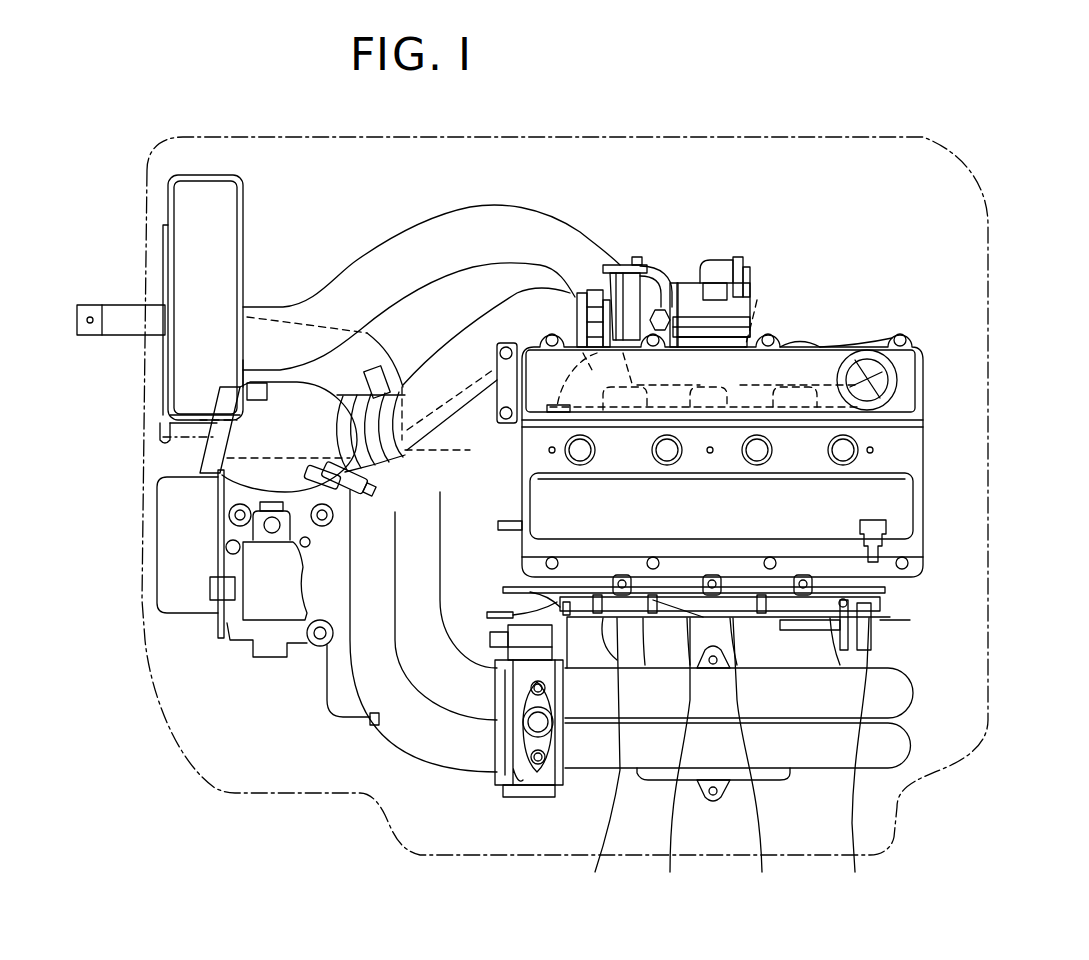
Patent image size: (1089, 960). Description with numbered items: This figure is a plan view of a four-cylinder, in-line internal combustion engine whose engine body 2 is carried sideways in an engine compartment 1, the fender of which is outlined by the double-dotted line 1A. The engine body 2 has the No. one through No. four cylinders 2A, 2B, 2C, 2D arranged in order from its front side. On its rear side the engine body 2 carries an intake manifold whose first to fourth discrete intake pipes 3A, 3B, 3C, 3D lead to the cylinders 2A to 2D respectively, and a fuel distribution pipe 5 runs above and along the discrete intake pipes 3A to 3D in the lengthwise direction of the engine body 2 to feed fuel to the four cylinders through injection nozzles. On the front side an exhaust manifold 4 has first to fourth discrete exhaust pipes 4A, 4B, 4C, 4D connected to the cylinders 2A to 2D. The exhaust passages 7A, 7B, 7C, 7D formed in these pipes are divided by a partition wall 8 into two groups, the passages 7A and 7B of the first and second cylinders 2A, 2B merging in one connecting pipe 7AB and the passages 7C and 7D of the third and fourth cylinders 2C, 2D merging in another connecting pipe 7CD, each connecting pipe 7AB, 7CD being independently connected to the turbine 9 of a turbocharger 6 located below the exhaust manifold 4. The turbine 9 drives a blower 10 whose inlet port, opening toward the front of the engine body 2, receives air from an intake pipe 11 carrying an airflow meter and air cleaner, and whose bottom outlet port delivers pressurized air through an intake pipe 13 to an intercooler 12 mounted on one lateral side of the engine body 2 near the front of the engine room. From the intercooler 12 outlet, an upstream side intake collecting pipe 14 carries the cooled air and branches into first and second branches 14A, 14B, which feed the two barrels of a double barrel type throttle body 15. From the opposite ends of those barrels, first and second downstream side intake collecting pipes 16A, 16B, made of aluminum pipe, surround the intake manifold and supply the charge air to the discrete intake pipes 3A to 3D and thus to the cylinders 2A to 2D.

The engine compartment 1 is at (962, 444).
The double-dotted line outlining the fender 1A is at (990, 527).
The engine body 2 is at (923, 423).
The No. 1 cylinder 2A is at (580, 462).
The No. 2 cylinder 2B is at (667, 462).
The No. 3 cylinder 2C is at (757, 462).
The No. 4 cylinder 2D is at (843, 462).
The first discrete intake pipe 3A is at (600, 759).
The second discrete intake pipe 3B is at (673, 759).
The third discrete intake pipe 3C is at (755, 759).
The fourth discrete intake pipe 3D is at (855, 759).
The exhaust manifold 4 is at (805, 328).
The first discrete exhaust pipe 4A is at (567, 393).
The second discrete exhaust pipe 4B is at (590, 290).
The third discrete exhaust pipe 4C is at (693, 330).
The fourth discrete exhaust pipe 4D is at (703, 397).
The fuel distribution pipe 5 is at (900, 660).
The turbocharger 6 is at (717, 223).
The exhaust passage 7A is at (570, 405).
The exhaust passage 7B is at (667, 395).
The exhaust passage 7C is at (747, 400).
The exhaust passage 7D is at (880, 345).
The connecting pipe 7AB is at (563, 430).
The connecting pipe 7CD is at (820, 353).
The partition wall 8 is at (757, 300).
The turbine 9 is at (720, 262).
The blower 10 is at (620, 283).
The intake pipe 11 is at (495, 305).
The intercooler 12 is at (232, 176).
The intake pipe 13 is at (400, 240).
The upstream side intake collecting pipe 14 is at (303, 380).
The first upstream side intake collecting pipe branch 14A is at (425, 682).
The second upstream side intake collecting pipe branch 14B is at (353, 675).
The double barrel type throttle body 15 is at (512, 800).
The first downstream side intake collecting pipe 16A is at (913, 693).
The second downstream side intake collecting pipe 16B is at (912, 745).